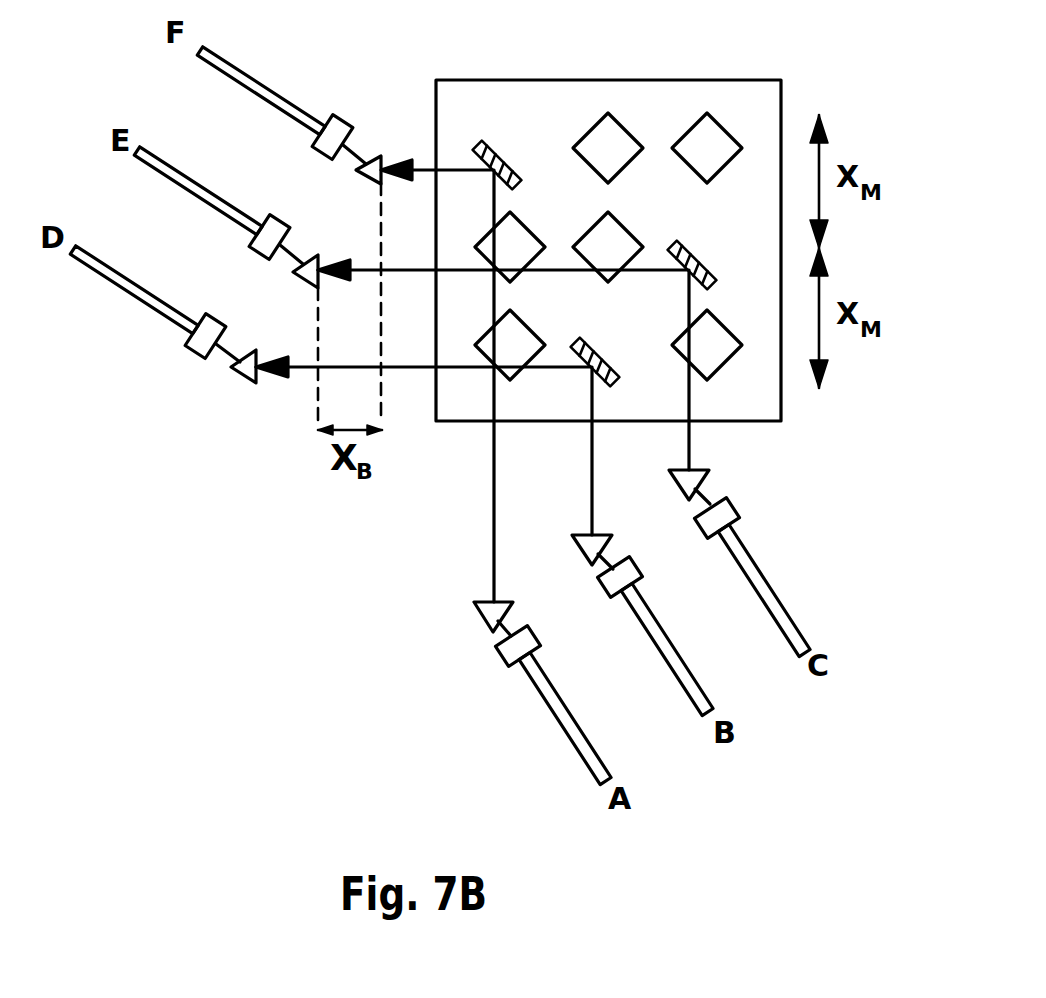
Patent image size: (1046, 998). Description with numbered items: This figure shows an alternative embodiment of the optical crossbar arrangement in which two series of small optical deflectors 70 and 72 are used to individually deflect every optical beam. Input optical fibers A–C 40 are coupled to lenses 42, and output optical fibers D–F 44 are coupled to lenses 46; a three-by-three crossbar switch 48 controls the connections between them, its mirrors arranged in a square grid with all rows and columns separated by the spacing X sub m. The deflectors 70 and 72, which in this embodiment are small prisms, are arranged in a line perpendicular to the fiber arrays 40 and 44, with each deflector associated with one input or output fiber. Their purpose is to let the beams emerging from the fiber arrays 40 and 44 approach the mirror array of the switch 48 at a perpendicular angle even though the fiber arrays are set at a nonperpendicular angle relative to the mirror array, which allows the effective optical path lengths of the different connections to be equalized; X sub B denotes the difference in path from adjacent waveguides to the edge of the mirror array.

The input optical fibers 40 is at (560, 722).
The lenses 42 is at (494, 658).
The output optical fibers 44 is at (133, 298).
The lenses 46 is at (344, 117).
The crossbar switch 48 is at (758, 103).
The optical deflectors 70 is at (476, 613).
The optical deflectors 72 is at (381, 156).